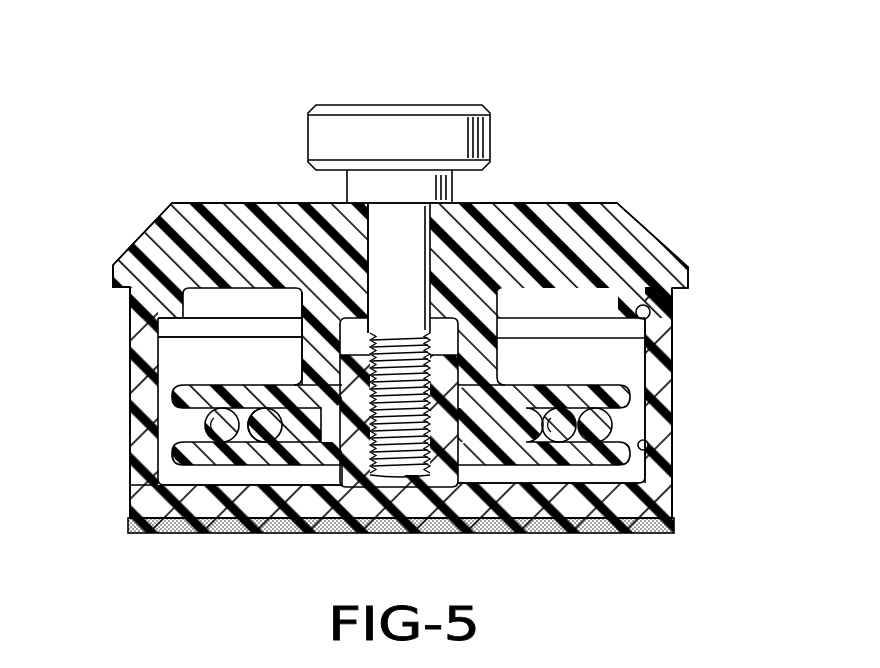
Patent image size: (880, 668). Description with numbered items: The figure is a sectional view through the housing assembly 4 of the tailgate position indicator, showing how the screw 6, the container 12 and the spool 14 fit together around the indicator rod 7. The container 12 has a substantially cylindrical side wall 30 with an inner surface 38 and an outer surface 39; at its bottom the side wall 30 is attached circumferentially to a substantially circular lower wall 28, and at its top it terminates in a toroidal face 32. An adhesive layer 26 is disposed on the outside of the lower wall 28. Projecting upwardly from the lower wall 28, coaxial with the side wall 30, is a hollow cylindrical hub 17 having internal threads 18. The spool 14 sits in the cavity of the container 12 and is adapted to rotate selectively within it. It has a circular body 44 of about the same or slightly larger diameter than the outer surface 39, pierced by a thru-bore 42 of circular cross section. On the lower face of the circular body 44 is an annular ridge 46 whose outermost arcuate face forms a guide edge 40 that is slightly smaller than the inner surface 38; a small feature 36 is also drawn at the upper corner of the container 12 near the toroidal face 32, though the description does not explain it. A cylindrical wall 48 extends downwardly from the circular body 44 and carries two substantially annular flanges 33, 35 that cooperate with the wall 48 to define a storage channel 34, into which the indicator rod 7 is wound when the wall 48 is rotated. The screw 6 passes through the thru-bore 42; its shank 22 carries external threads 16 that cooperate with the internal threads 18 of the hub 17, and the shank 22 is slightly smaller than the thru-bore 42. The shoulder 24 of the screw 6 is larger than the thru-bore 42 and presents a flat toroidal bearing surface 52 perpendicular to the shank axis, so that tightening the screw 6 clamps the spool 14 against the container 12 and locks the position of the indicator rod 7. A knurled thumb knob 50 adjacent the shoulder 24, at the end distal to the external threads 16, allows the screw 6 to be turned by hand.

The housing assembly 4 is at (127, 484).
The screw 6 is at (440, 128).
The indicator rod 7 is at (233, 433).
The container 12 is at (670, 384).
The spool 14 is at (660, 213).
The external threads 16 is at (404, 448).
The hollow cylindrical hub 17 is at (350, 438).
The internal threads 18 is at (436, 447).
The shank 22 is at (412, 283).
The shoulder 24 is at (430, 319).
The adhesive layer 26 is at (641, 533).
The lower wall 28 is at (217, 508).
The side wall 30 is at (657, 418).
The toroidal face 32 is at (120, 287).
The annular flange 33 is at (583, 389).
The storage channel 34 is at (188, 426).
The annular flange 35 is at (596, 466).
The seal ring 36 is at (649, 306).
The inner surface 38 is at (166, 314).
The outer surface 39 is at (673, 473).
The guide edge 40 is at (652, 338).
The thru-bore 42 is at (372, 235).
The circular body 44 is at (160, 229).
The annular ridge 46 is at (200, 362).
The cylindrical wall 48 is at (322, 352).
The knurled thumb knob 50 is at (416, 104).
The toroidal bearing surface 52 is at (553, 200).